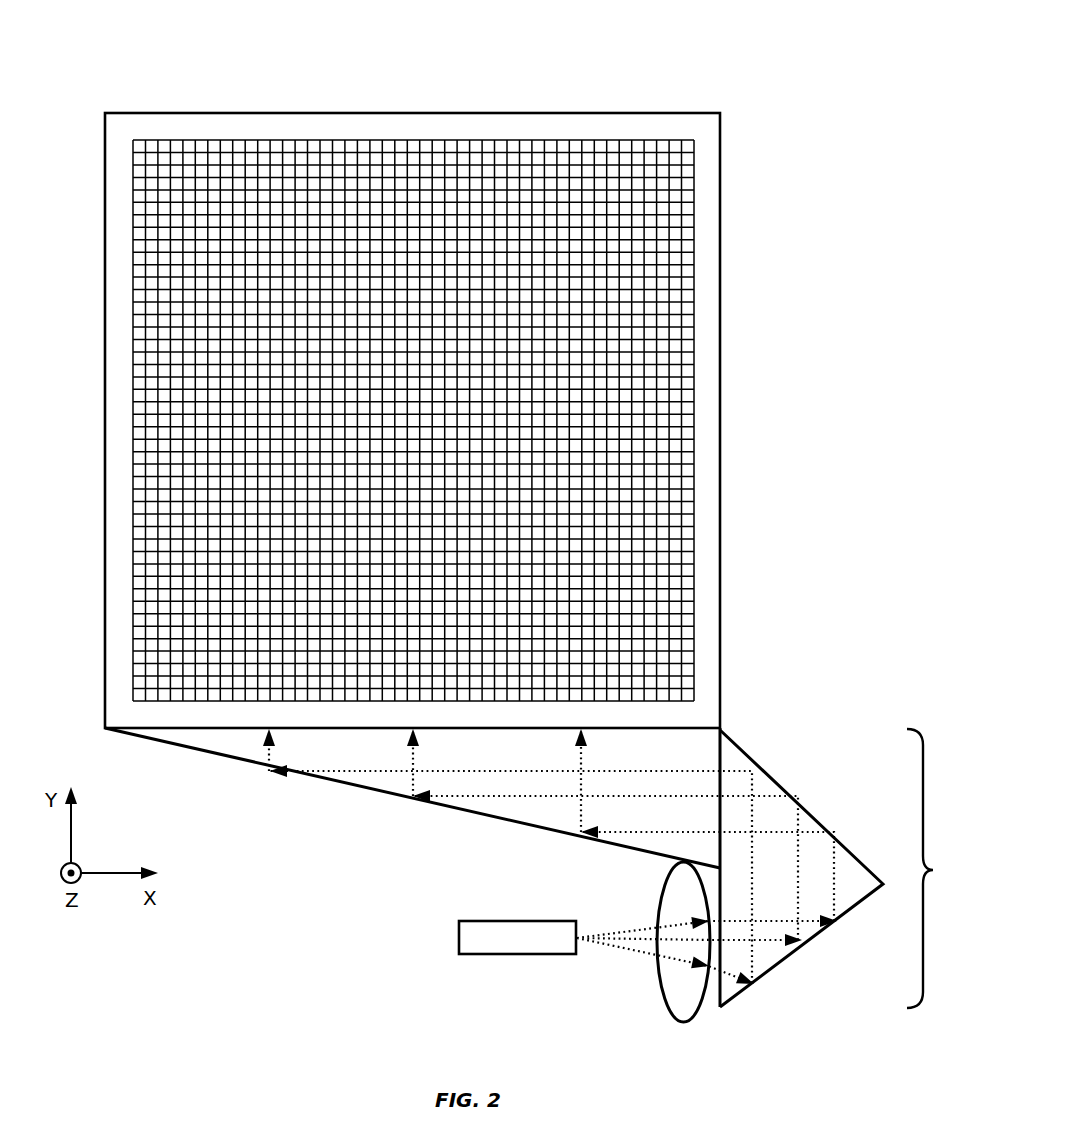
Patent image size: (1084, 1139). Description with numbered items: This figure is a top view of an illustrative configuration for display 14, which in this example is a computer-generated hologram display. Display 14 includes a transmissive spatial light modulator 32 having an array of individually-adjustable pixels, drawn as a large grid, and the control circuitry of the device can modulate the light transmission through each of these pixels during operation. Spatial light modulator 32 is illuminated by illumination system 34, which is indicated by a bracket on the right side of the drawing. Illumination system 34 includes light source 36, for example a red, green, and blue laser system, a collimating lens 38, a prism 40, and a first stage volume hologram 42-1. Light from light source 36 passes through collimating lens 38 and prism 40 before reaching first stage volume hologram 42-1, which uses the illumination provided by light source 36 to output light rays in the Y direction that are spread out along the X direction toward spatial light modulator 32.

The display 14 is at (597, 17).
The transmissive spatial light modulator 32 is at (697, 112).
The illumination system 34 is at (937, 868).
The light source 36 is at (498, 955).
The collimating lens 38 is at (683, 1023).
The prism 40 is at (775, 972).
The first stage volume hologram 42-1 is at (490, 817).